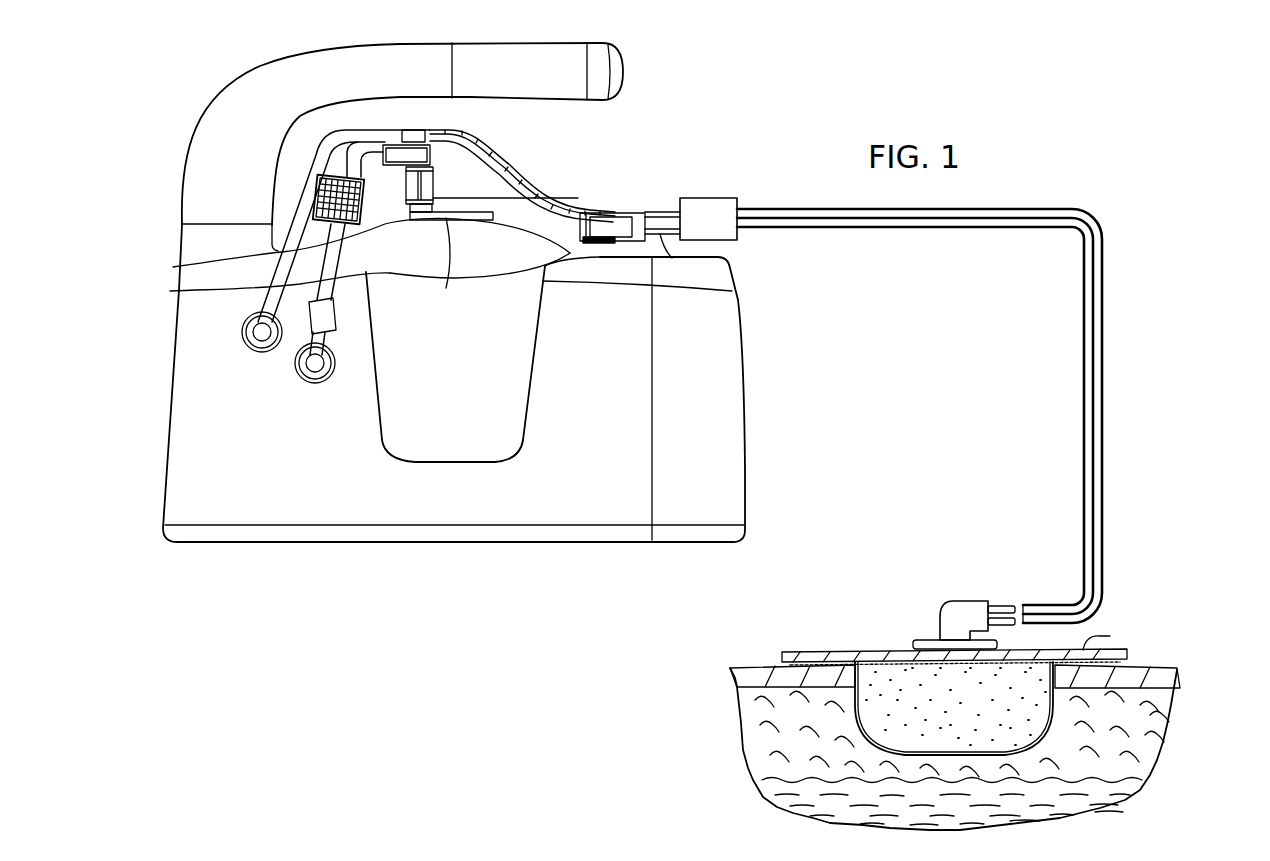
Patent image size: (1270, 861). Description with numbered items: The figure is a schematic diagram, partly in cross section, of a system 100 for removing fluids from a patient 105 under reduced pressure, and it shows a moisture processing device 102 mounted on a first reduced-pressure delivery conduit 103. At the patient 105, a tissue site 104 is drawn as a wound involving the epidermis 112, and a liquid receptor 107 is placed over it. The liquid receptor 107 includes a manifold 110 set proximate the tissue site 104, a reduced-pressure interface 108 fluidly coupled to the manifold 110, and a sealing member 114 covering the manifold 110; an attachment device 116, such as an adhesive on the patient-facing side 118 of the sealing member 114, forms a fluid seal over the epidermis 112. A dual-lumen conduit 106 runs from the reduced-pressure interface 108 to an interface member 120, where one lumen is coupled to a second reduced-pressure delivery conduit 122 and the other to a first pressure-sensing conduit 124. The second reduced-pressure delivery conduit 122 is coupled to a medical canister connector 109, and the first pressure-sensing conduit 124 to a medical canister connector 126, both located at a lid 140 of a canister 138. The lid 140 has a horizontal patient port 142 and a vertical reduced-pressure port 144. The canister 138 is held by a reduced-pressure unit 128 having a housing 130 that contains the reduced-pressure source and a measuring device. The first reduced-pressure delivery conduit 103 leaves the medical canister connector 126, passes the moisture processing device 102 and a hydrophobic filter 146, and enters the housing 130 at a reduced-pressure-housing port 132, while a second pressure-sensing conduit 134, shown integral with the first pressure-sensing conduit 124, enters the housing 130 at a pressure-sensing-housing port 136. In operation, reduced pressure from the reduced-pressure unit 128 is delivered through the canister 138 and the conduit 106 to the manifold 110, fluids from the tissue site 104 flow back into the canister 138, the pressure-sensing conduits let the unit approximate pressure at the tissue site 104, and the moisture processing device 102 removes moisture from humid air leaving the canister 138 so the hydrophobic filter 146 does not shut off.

The system 100 is at (1160, 549).
The moisture processing device 102 is at (362, 202).
The first reduced-pressure delivery conduit 103 is at (334, 342).
The tissue site 104 is at (1028, 738).
The patient 105 is at (1172, 752).
The conduit 106 is at (1103, 357).
The liquid receptor 107 is at (993, 580).
The reduced-pressure interface 108 is at (953, 603).
The medical canister connector 109 is at (603, 233).
The manifold 110 is at (977, 723).
The epidermis 112 is at (1180, 678).
The sealing member 114 is at (1083, 650).
The attachment device 116 is at (1127, 656).
The patient-facing side 118 is at (777, 665).
The interface member 120 is at (735, 195).
The second reduced-pressure delivery conduit 122 is at (668, 236).
The first pressure-sensing conduit 124 is at (660, 210).
The medical canister connector 126 is at (540, 181).
The reduced-pressure unit 128 is at (161, 474).
The housing 130 is at (177, 360).
The reduced-pressure-housing port 132 is at (310, 380).
The second pressure-sensing conduit 134 is at (302, 184).
The pressure-sensing-housing port 136 is at (253, 352).
The canister 138 is at (470, 396).
The lid 140 is at (525, 257).
The patient port 142 is at (570, 258).
The reduced-pressure port 144 is at (442, 250).
The hydrophobic filter 146 is at (335, 322).